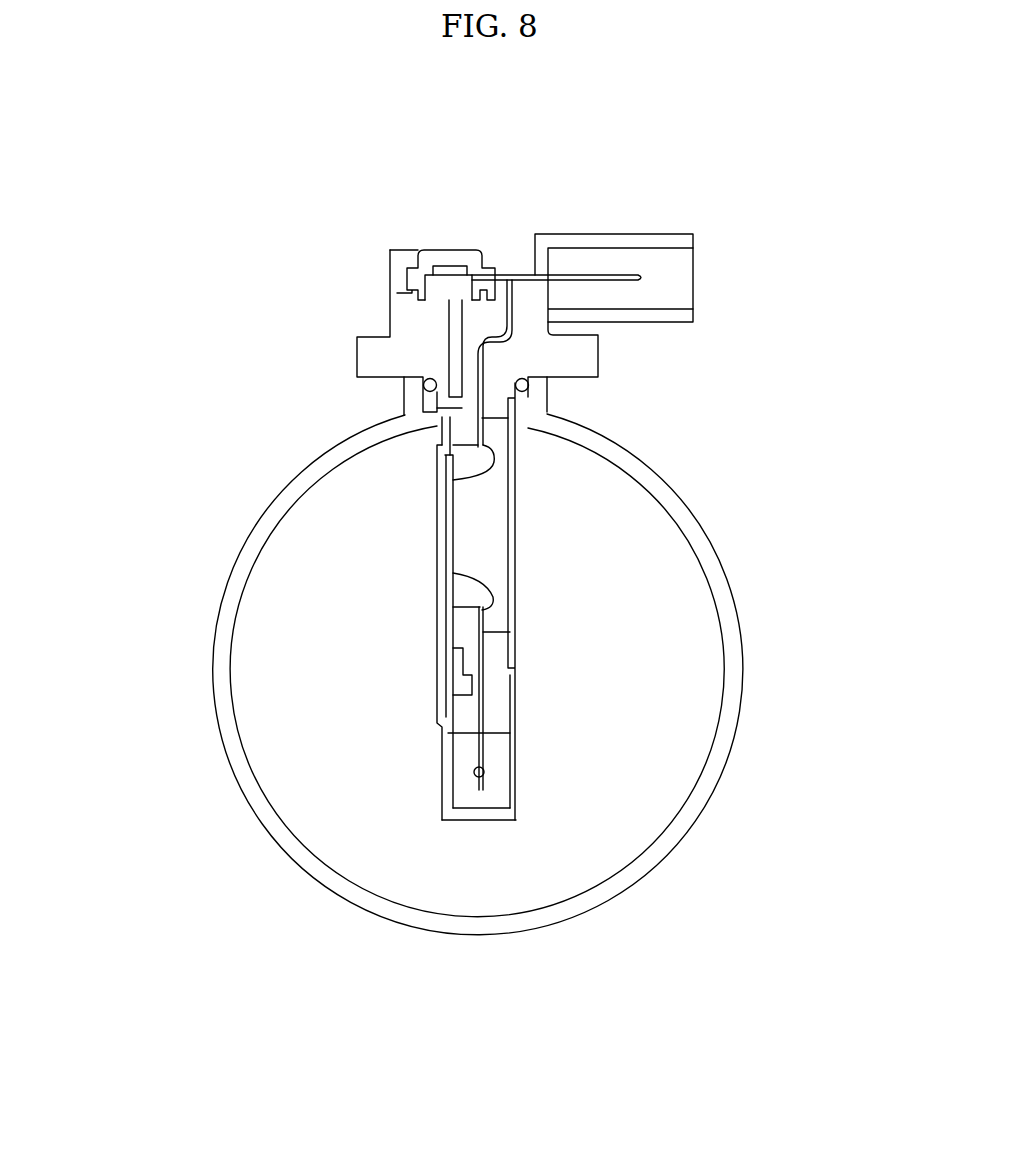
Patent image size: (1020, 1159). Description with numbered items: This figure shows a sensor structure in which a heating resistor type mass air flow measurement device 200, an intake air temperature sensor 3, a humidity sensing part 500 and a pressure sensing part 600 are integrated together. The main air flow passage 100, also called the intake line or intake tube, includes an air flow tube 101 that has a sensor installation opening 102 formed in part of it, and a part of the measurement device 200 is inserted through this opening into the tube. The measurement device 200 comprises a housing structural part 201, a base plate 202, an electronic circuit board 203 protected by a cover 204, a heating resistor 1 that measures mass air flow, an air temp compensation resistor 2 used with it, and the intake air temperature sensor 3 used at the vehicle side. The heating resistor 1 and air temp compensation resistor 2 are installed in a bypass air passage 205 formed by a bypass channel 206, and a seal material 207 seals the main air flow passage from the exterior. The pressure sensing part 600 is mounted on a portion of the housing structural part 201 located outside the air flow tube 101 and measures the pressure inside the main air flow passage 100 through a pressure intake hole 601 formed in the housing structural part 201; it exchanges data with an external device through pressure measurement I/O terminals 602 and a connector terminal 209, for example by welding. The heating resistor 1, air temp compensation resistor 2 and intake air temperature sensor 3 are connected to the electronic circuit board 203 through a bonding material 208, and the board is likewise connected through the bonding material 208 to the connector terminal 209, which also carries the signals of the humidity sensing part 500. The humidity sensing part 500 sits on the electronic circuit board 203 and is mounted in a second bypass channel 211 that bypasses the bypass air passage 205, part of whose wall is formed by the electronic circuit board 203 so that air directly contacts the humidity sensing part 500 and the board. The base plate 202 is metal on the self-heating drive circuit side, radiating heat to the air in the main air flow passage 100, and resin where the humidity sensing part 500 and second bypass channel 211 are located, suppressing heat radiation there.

The main air flow passage 100 is at (357, 813).
The air flow tube 101 is at (237, 760).
The sensor installation opening 102 is at (523, 408).
The heating resistor type mass air flow measurement device 200 is at (370, 350).
The housing structural part 201 is at (467, 423).
The base plate 202 is at (438, 694).
The electronic circuit board 203 is at (453, 533).
The cover 204 is at (517, 605).
The bypass air passage 205 is at (497, 760).
The bypass channel 206 is at (515, 788).
The seal material 207 is at (523, 379).
The bonding material 208 is at (492, 457).
The connector terminal 209 is at (637, 277).
The second bypass channel 211 is at (460, 712).
The humidity sensing part 500 is at (458, 686).
The pressure sensing part 600 is at (432, 250).
The pressure intake hole 601 is at (453, 333).
The pressure measurement I/O terminals 602 is at (505, 276).
The heating resistor 1 is at (435, 802).
The air temp compensation resistor 2 is at (435, 802).
The intake air temperature sensor 3 is at (478, 777).